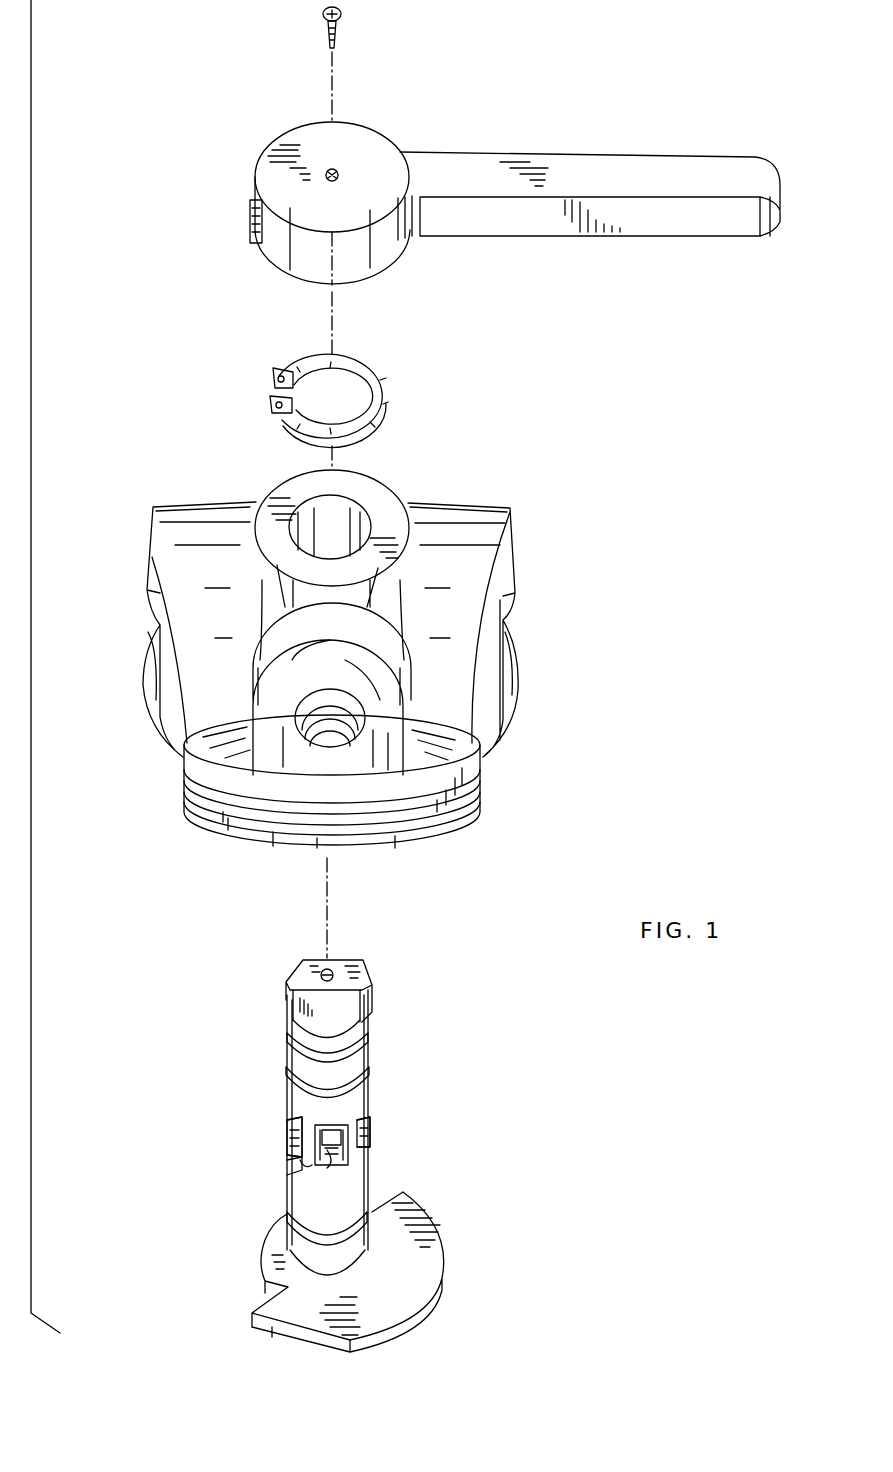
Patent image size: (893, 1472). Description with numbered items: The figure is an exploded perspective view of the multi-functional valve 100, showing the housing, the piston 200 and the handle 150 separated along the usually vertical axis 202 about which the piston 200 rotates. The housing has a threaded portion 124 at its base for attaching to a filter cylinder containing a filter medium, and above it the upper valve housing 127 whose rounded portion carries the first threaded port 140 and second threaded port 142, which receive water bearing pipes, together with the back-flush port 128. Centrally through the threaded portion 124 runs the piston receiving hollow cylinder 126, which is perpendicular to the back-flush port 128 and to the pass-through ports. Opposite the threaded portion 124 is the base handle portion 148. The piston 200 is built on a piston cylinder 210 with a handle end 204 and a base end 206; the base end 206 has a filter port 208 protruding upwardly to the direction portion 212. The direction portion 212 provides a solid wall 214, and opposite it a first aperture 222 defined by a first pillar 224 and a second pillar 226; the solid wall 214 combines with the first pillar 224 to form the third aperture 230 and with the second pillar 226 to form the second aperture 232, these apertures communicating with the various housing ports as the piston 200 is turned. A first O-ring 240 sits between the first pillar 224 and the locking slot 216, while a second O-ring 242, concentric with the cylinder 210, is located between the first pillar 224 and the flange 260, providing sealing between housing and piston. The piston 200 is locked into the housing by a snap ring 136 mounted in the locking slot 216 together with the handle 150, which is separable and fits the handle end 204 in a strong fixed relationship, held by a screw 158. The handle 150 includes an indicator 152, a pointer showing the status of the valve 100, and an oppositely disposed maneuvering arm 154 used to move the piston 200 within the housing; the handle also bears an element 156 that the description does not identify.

The multi-functional valve 100 is at (648, 669).
The threaded portion 124 is at (248, 820).
The piston receiving hollow cylinder 126 is at (320, 505).
The upper valve housing 127 is at (505, 528).
The back-flush port 128 is at (335, 723).
The snap ring 136 is at (385, 398).
The first threaded port 140 is at (330, 655).
The second threaded port 142 is at (160, 634).
The base handle portion 148 is at (378, 500).
The handle 150 is at (468, 194).
The indicator 152 is at (276, 142).
The maneuvering arm 154 is at (633, 180).
The tab on handle knob 156 is at (260, 226).
The screw 158 is at (342, 15).
The piston 200 is at (342, 1143).
The vertical axis 202 is at (335, 315).
The handle end 204 is at (370, 963).
The base end 206 is at (332, 1272).
The filter port 208 is at (340, 1162).
The piston cylinder 210 is at (300, 1160).
The direction portion 212 is at (630, 98).
The solid wall 214 is at (372, 1098).
The locking slot 216 is at (292, 1047).
The first aperture 222 is at (328, 1165).
The first pillar 224 is at (308, 1158).
The second pillar 226 is at (352, 1130).
The third aperture 230 is at (288, 1130).
The second aperture 232 is at (370, 1133).
The first O-ring 240 is at (372, 1066).
The second O-ring 242 is at (285, 1208).
The flange 260 is at (422, 1275).